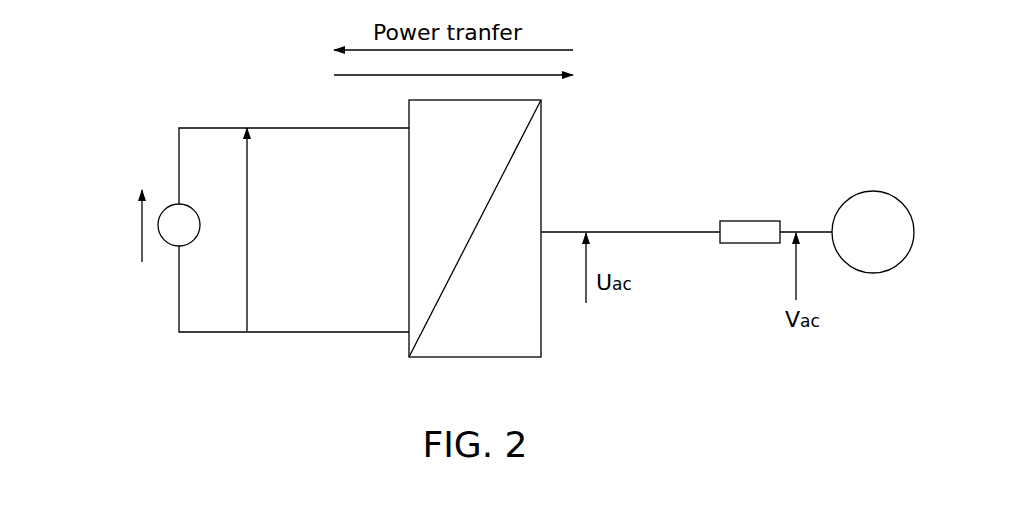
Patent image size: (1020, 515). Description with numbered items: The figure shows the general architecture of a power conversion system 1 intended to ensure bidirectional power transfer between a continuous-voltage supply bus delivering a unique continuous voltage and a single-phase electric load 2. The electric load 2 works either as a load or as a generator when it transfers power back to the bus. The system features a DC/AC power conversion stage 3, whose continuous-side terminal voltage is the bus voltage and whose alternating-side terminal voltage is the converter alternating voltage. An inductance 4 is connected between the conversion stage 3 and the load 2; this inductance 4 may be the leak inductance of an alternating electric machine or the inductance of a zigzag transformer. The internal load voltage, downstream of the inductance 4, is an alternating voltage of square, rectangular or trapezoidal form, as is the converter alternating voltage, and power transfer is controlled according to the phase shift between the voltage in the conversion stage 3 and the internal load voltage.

The power conversion system 1 is at (230, 57).
The electric load 2 is at (855, 282).
The DC/AC power conversion stage 3 is at (582, 172).
The inductance 4 is at (728, 221).